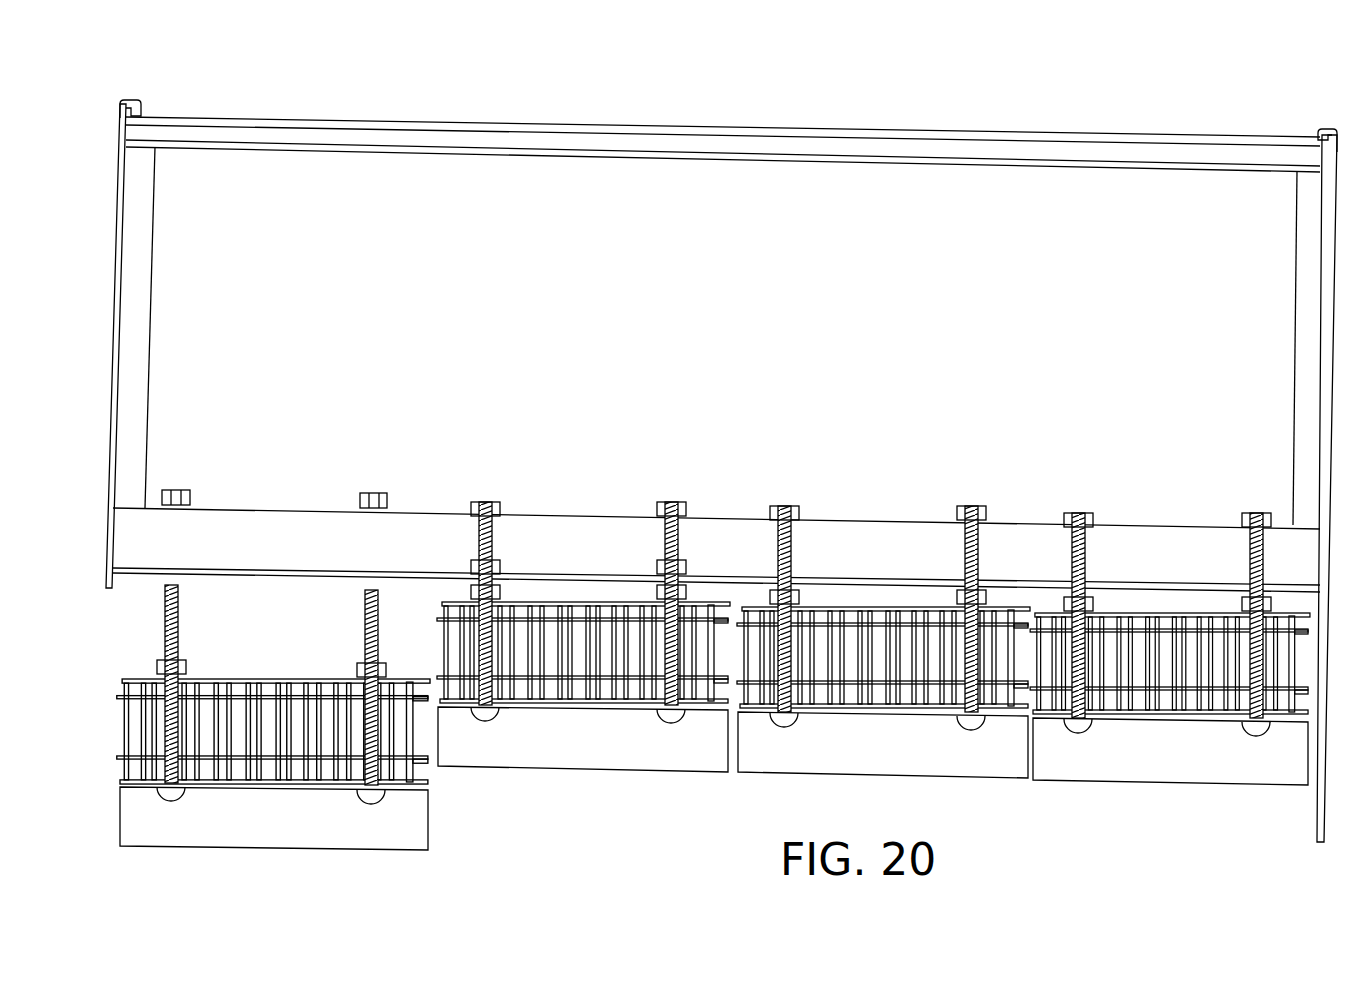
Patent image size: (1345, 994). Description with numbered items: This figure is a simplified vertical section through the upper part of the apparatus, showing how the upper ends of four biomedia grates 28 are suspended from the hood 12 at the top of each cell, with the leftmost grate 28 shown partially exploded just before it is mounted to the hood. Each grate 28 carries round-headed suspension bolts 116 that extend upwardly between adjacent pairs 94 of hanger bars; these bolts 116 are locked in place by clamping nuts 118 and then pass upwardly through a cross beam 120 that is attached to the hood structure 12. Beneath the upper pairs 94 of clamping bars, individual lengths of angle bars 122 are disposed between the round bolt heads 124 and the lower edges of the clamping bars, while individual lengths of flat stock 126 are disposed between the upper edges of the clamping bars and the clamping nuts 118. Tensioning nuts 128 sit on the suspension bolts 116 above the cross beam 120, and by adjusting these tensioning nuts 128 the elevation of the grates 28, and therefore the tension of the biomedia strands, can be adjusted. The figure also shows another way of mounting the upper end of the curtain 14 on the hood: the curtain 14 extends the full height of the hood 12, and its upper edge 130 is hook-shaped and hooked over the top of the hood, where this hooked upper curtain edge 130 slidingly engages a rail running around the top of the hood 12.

The hood 12 is at (632, 118).
The curtain 14 is at (105, 578).
The grates 28 is at (700, 665).
The pairs of hanger bars 94 is at (763, 692).
The suspension bolts 116 is at (1087, 567).
The clamping nuts 118 is at (470, 596).
The cross beam 120 is at (282, 575).
The angle bars 122 is at (432, 822).
The round bolt heads 124 is at (165, 790).
The flat stock 126 is at (567, 600).
The tensioning nuts 128 is at (360, 498).
The upper edge of the curtain 130 is at (142, 104).